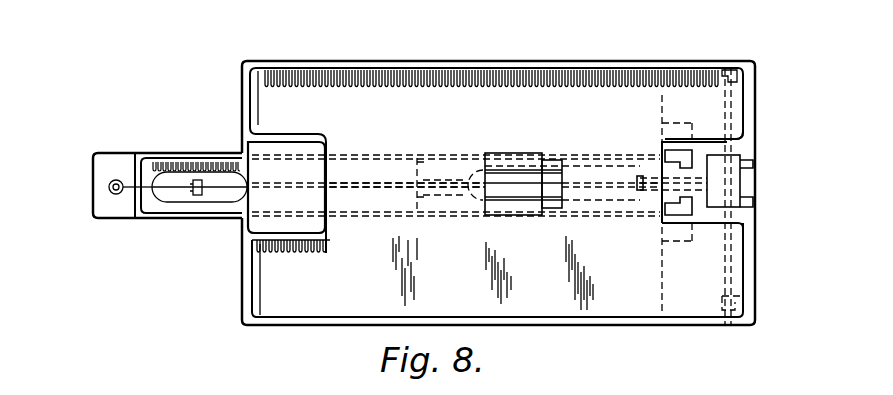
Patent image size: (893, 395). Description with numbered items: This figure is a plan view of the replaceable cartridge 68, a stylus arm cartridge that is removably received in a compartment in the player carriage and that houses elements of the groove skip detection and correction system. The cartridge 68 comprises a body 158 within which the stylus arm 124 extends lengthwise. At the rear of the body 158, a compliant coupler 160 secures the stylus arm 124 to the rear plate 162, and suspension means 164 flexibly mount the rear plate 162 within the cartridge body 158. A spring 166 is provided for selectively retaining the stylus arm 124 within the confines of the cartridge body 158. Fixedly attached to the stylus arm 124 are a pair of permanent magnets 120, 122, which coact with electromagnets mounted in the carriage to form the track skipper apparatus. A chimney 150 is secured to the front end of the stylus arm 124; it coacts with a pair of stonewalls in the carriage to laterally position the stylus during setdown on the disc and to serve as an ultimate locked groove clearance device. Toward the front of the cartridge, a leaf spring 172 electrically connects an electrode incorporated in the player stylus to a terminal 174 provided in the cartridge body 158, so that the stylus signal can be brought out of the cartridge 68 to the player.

The replaceable cartridge 68 is at (620, 27).
The body 158 is at (514, 60).
The terminal 174 is at (116, 180).
The leaf spring 172 is at (162, 158).
The chimney 150 is at (192, 197).
The permanent magnet 120 is at (203, 182).
The stylus arm 124 is at (375, 183).
The spring 166 is at (513, 185).
The permanent magnet 122 is at (628, 150).
The compliant coupler 160 is at (697, 165).
The suspension means 164 is at (735, 108).
The rear plate 162 is at (735, 188).